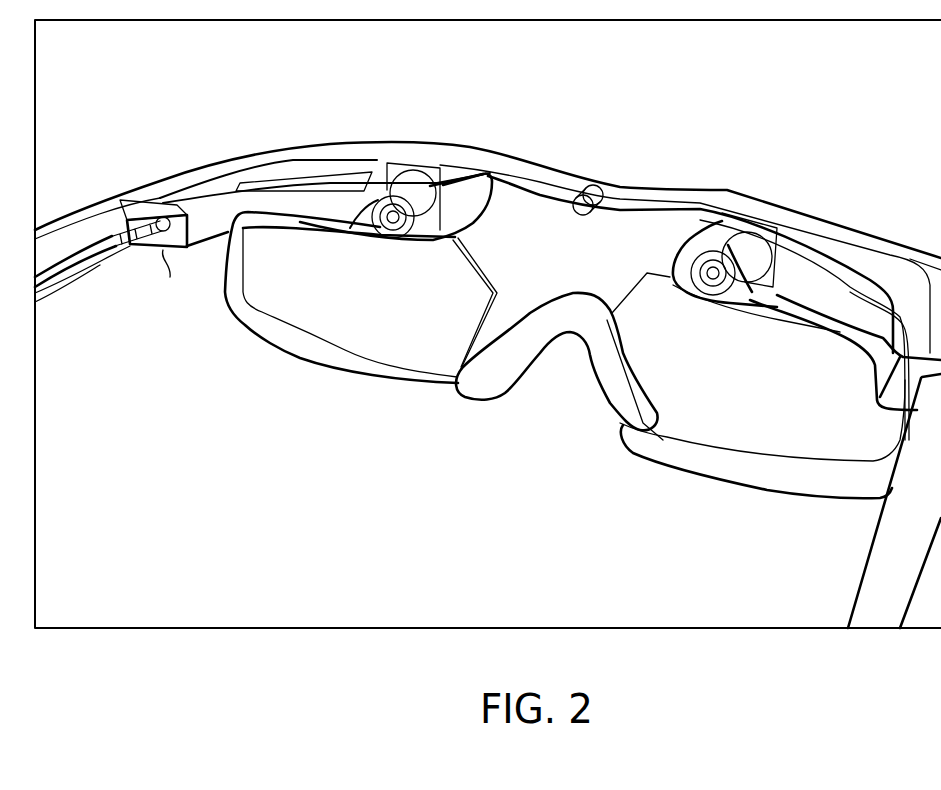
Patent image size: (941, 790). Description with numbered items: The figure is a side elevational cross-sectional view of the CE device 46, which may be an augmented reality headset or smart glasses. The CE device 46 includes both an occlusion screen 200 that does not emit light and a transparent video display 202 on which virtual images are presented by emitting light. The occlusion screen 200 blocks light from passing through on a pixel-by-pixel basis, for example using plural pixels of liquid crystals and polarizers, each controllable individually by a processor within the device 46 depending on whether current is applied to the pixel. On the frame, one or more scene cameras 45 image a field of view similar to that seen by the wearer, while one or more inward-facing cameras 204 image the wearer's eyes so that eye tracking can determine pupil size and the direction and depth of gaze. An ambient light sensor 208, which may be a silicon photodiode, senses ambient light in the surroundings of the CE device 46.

The CE device 46 is at (116, 79).
The scene camera 45 is at (208, 190).
The inward-facing camera 204 is at (710, 257).
The ambient light sensor 208 is at (590, 186).
The occlusion screen 200 is at (306, 368).
The transparent video display 202 is at (398, 374).